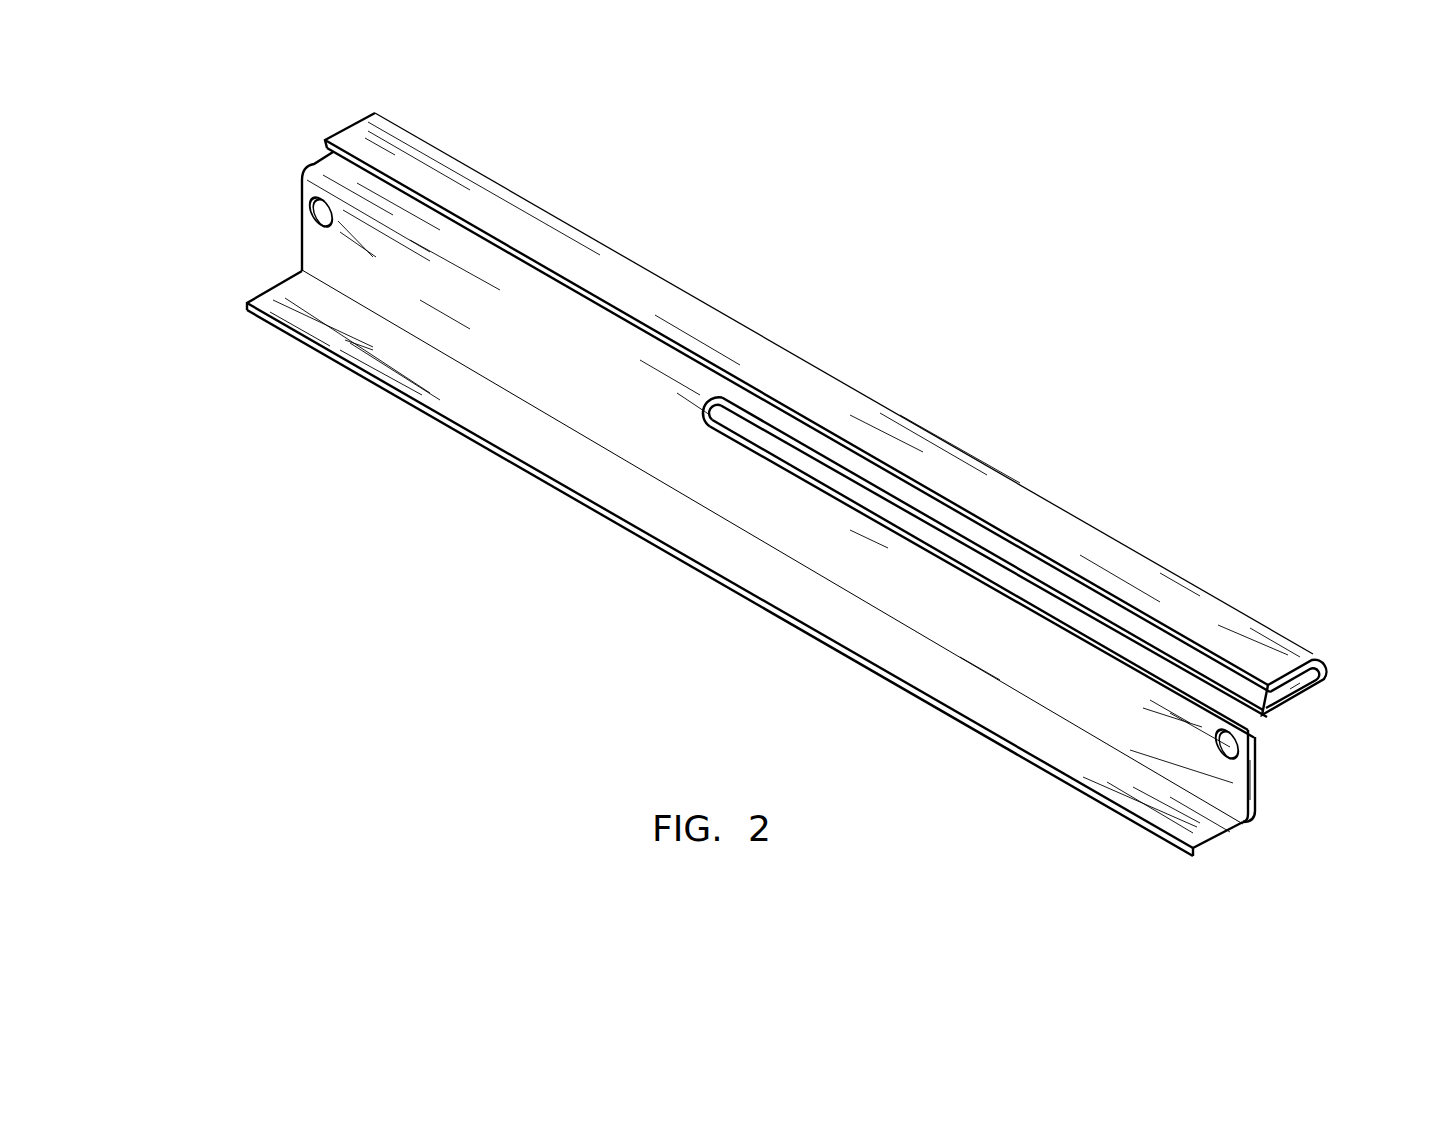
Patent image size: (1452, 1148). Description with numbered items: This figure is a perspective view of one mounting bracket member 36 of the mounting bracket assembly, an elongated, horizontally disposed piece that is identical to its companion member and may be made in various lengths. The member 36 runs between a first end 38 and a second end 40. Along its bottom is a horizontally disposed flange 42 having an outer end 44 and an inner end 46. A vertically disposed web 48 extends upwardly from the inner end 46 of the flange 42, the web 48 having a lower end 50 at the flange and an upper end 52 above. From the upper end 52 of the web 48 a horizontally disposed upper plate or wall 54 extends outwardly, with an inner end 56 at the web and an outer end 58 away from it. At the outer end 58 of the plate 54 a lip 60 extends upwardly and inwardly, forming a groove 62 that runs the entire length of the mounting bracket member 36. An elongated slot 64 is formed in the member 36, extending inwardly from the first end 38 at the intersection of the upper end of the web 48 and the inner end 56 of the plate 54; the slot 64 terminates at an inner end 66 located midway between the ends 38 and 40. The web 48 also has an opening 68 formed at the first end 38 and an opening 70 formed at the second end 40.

The mounting bracket member 36 is at (918, 388).
The first end 38 is at (1263, 782).
The second end 40 is at (267, 235).
The horizontally disposed flange 42 is at (1178, 819).
The outer end 44 is at (1075, 789).
The inner end 46 is at (302, 275).
The vertically disposed web 48 is at (1044, 674).
The lower end 50 is at (945, 643).
The upper end 52 is at (548, 305).
The upper plate 54 is at (437, 220).
The inner end 56 is at (475, 254).
The outer end 58 is at (668, 283).
The lip 60 is at (1298, 661).
The groove 62 is at (1288, 692).
The elongated slot 64 is at (1076, 619).
The inner end 66 is at (721, 399).
The opening 68 is at (1235, 747).
The opening 70 is at (313, 208).